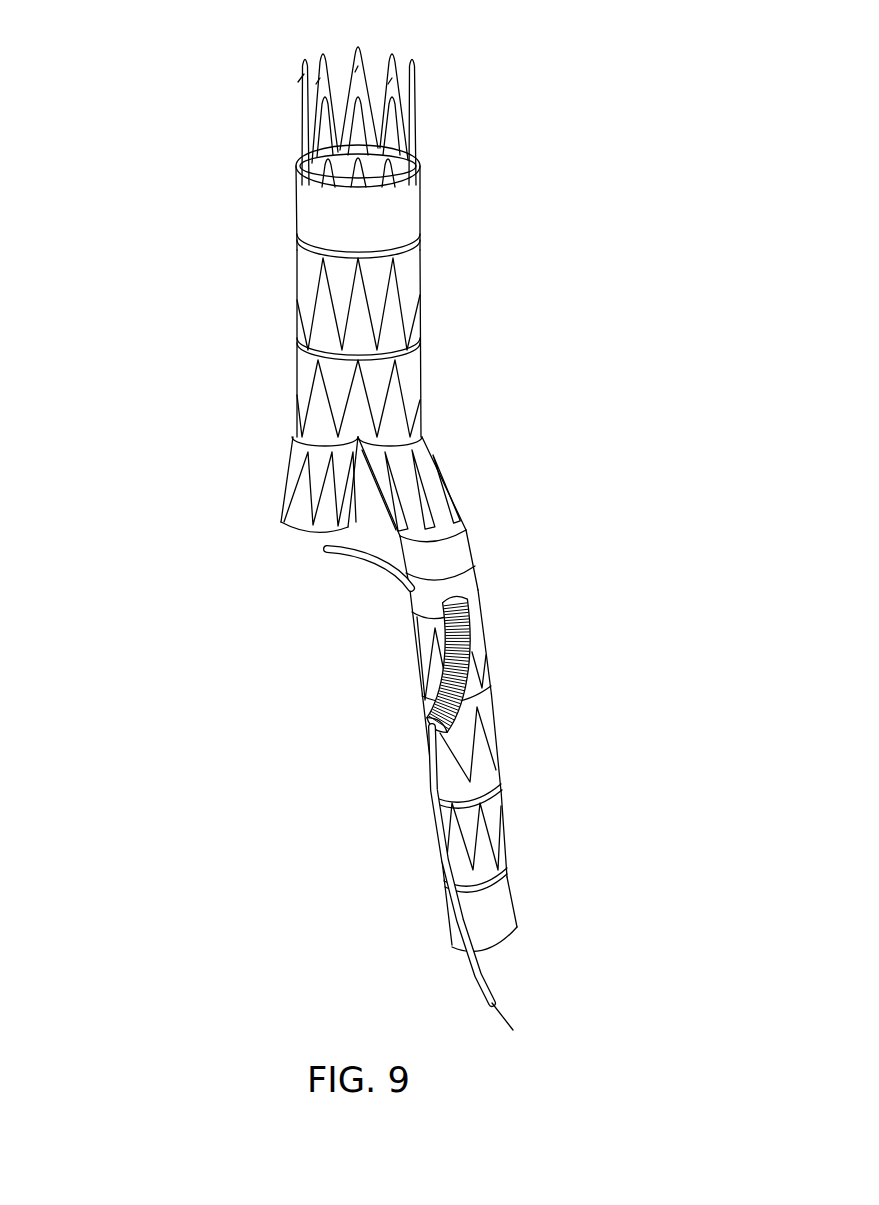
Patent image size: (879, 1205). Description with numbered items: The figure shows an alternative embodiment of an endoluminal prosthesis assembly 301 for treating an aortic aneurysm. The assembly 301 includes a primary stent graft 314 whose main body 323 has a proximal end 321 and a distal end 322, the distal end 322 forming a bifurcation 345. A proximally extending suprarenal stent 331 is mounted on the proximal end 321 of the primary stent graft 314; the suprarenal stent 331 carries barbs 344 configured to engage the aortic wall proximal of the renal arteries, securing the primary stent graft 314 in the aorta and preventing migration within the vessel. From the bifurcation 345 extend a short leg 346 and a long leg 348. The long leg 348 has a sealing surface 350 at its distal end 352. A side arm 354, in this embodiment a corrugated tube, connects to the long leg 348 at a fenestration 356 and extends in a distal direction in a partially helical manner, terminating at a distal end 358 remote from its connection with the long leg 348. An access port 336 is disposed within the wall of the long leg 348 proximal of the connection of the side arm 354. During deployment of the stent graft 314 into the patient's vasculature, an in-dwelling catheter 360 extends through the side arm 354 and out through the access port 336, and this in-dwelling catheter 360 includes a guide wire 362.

The endoluminal prosthesis assembly 301 is at (170, 173).
The suprarenal stent 331 is at (353, 50).
The barbs 344 is at (397, 80).
The proximal end 321 is at (387, 218).
The primary stent graft 314 is at (337, 383).
The main body 323 is at (380, 388).
The bifurcation 345 is at (360, 437).
The short leg 346 is at (312, 495).
The distal end 322 is at (427, 450).
The access port 336 is at (436, 575).
The in-dwelling catheter 360 is at (345, 553).
The fenestration 356 is at (412, 612).
The side arm 354 is at (472, 650).
The distal end 358 is at (462, 723).
The long leg 348 is at (482, 770).
The sealing surface 350 is at (495, 883).
The distal end 352 is at (497, 898).
The guide wire 362 is at (480, 980).